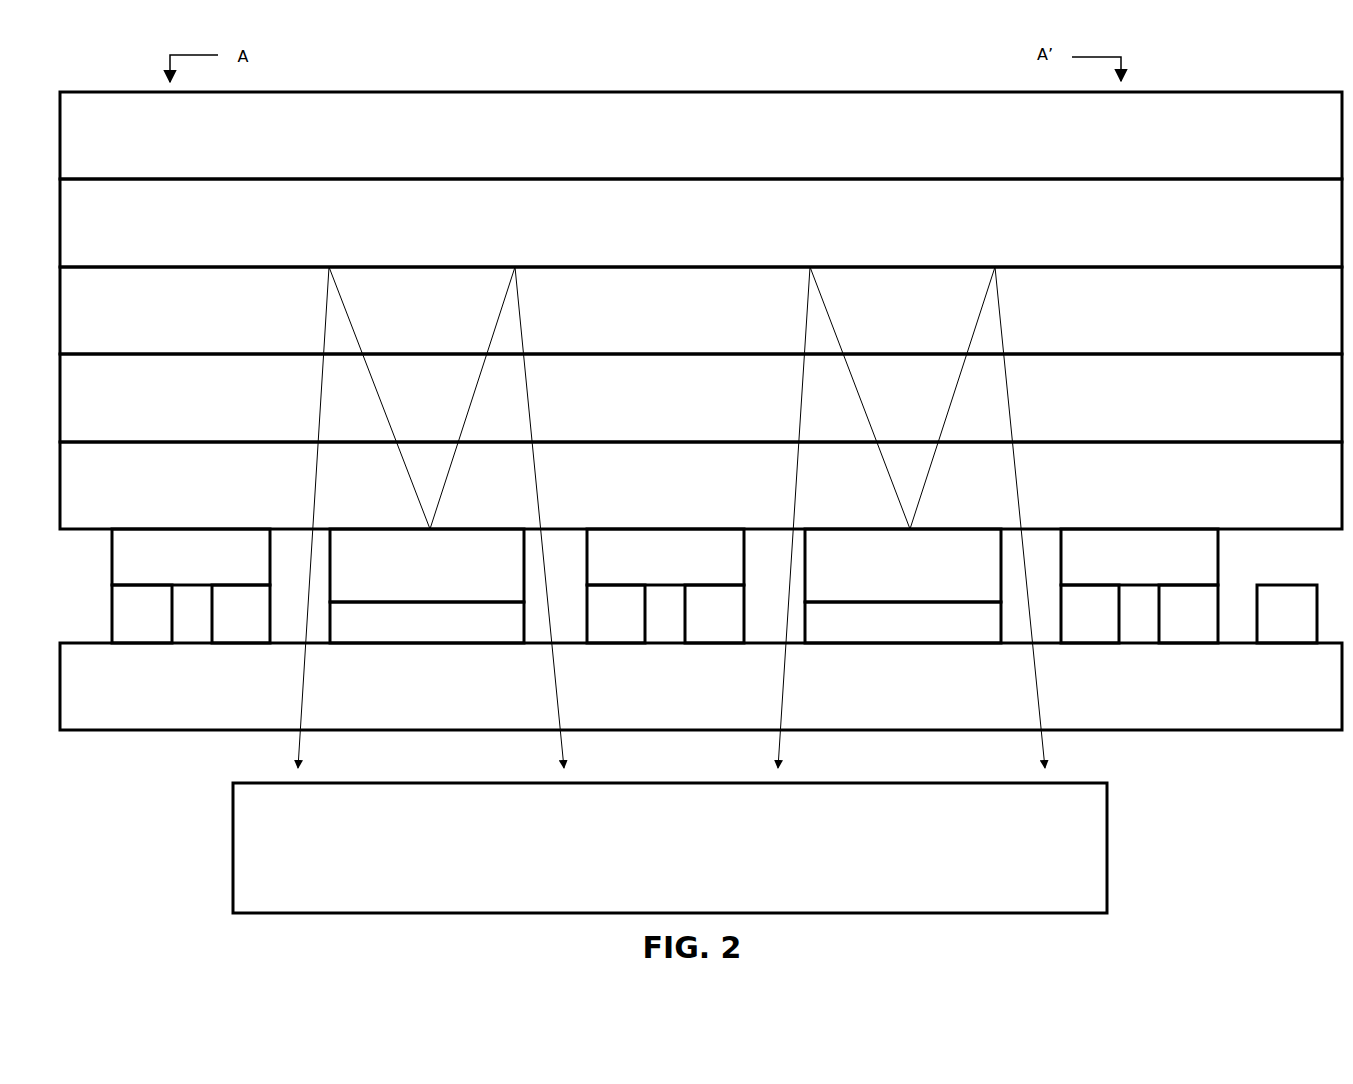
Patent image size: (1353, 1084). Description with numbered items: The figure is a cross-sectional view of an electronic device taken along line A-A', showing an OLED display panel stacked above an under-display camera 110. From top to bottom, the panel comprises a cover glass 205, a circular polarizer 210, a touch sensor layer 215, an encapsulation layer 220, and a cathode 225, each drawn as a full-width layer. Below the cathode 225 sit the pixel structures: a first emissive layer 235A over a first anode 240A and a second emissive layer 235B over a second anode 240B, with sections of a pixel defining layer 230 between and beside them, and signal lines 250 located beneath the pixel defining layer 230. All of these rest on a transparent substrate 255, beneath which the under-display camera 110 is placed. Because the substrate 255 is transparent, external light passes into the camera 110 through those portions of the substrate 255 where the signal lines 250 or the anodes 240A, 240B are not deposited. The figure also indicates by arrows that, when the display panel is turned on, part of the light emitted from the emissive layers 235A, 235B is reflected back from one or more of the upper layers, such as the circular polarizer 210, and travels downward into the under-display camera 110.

The cover glass 205 is at (701, 135).
The circular polarizer 210 is at (701, 223).
The touch sensor layer 215 is at (701, 310).
The encapsulation layer 220 is at (701, 398).
The cathode 225 is at (701, 485).
The pixel defining layer 230 is at (665, 557).
The emissive layer 235A is at (427, 565).
The emissive layer 235B is at (903, 565).
The anode 240A is at (427, 622).
The anode 240B is at (903, 622).
The signal lines 250 is at (714, 614).
The substrate 255 is at (701, 686).
The under-display camera 110 is at (670, 848).